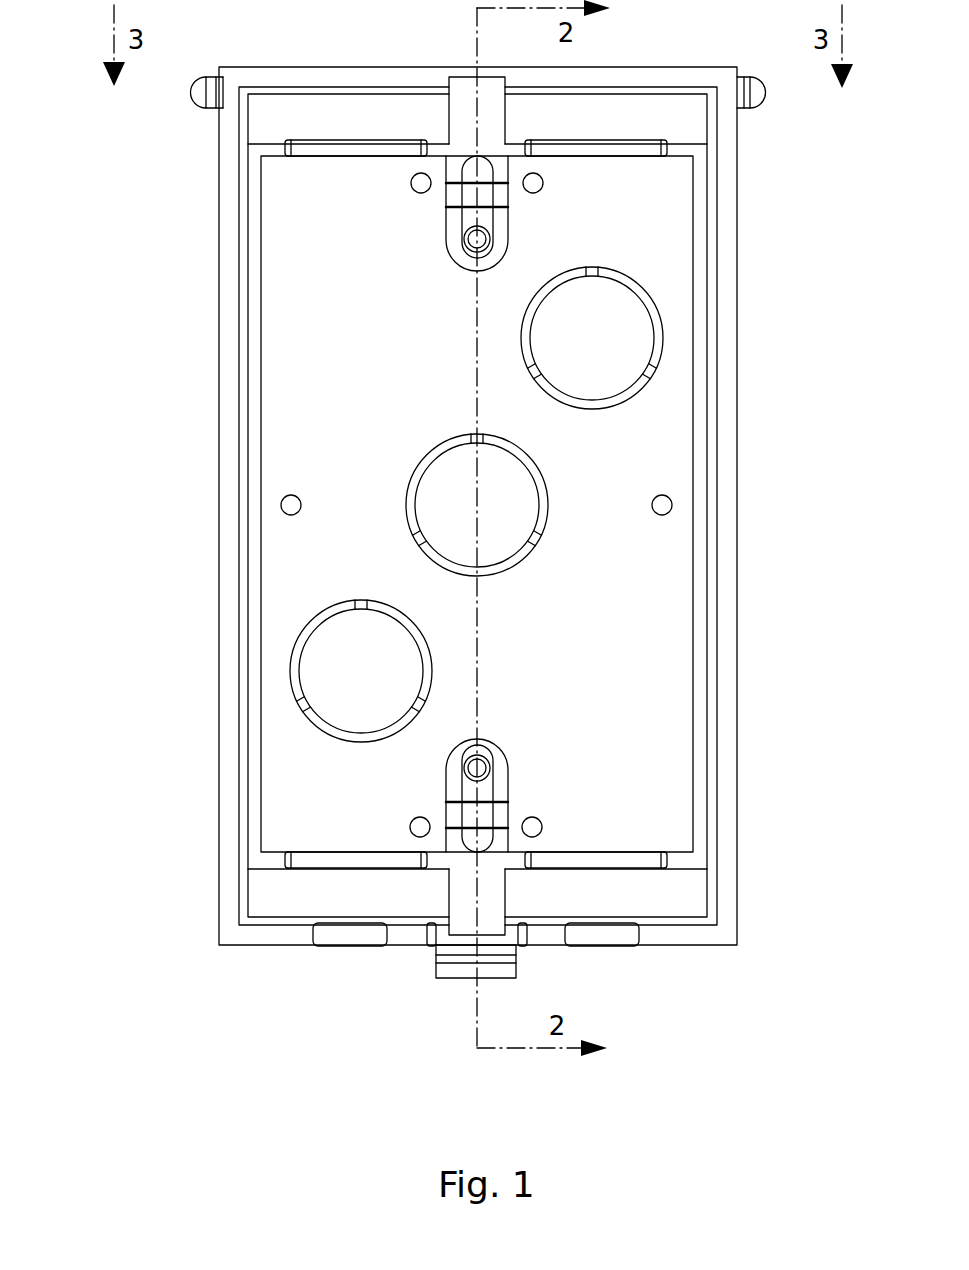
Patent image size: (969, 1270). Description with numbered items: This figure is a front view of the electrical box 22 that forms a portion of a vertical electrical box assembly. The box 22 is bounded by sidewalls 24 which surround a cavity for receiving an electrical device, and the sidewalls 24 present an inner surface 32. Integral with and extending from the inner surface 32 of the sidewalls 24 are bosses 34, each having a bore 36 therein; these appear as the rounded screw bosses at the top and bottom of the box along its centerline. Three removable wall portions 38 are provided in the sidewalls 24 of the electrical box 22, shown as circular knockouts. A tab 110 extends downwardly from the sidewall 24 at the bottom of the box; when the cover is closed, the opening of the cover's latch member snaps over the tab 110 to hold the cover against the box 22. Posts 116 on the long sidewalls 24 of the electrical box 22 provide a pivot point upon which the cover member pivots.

The electrical box 22 is at (148, 354).
The sidewalls 24 is at (701, 244).
The inner surface 32 is at (624, 176).
The bosses 34 is at (446, 232).
The bores 36 is at (480, 239).
The removable wall portions 38 is at (579, 350).
The tab 110 is at (512, 972).
The posts 116 is at (765, 92).